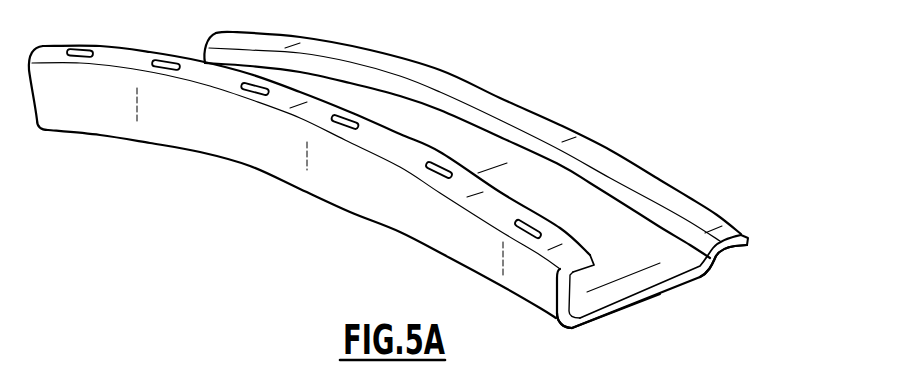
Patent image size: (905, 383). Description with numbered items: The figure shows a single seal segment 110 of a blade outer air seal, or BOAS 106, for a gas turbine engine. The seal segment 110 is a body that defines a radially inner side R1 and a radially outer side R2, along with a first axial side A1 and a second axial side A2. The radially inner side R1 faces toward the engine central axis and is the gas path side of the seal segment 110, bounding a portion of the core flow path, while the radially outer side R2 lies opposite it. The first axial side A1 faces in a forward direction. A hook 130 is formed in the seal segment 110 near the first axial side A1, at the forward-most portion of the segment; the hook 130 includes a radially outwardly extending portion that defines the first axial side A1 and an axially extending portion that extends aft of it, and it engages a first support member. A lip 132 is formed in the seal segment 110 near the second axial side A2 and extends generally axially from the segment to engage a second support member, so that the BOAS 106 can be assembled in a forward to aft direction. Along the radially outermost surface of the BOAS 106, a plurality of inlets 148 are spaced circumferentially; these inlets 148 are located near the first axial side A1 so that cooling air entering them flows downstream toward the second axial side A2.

The blade outer air seal (BOAS) 106 is at (272, 148).
The seal segment 110 is at (158, 123).
The hook 130 is at (587, 257).
The lip 132 is at (742, 234).
The inlets 148 is at (433, 167).
The first axial side A1 is at (539, 292).
The second axial side A2 is at (749, 240).
The radially inner side R1 is at (661, 296).
The radially outer side R2 is at (670, 268).